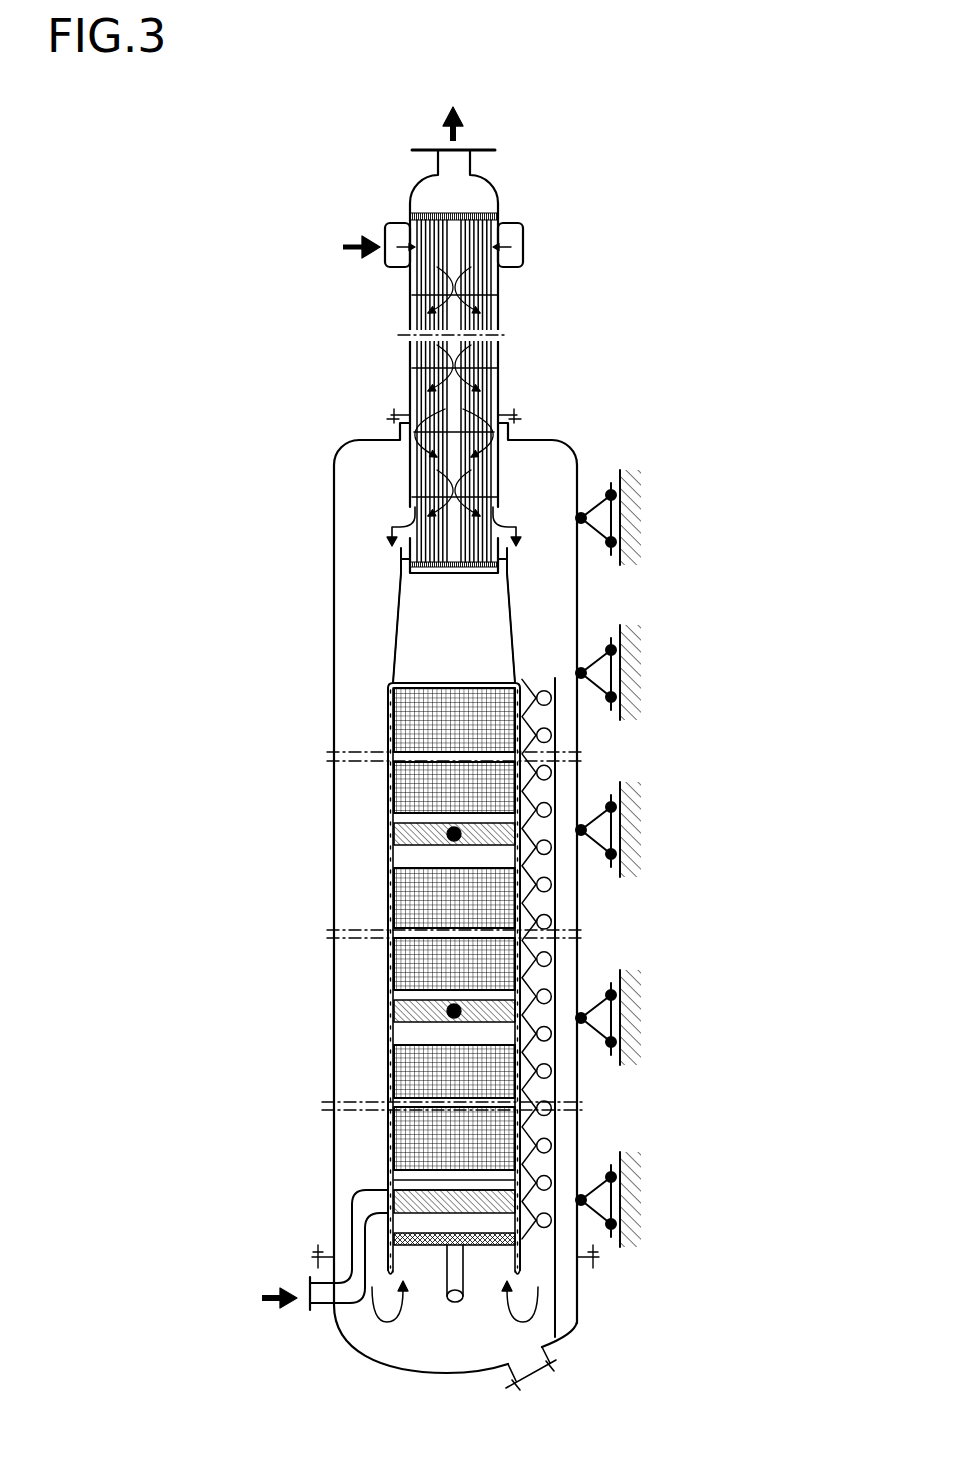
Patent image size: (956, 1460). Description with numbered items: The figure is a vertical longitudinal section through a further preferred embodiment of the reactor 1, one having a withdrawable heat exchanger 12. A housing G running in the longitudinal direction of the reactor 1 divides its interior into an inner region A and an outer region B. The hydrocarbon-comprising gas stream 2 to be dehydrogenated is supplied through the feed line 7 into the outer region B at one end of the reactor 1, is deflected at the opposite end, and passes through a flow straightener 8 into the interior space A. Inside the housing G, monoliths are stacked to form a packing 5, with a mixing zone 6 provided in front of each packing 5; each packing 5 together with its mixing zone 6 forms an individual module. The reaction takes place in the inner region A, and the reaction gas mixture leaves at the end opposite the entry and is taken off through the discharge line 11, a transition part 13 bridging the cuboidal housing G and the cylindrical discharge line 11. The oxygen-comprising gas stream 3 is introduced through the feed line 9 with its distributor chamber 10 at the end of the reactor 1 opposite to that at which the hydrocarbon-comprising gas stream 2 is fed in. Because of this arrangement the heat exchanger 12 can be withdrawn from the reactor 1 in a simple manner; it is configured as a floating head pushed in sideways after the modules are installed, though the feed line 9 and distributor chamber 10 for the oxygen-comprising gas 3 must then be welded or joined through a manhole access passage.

The reactor 1 is at (314, 762).
The hydrocarbon-comprising gas stream 2 is at (356, 240).
The oxygen-comprising gas stream 3 is at (283, 1291).
The packing 5 is at (400, 790).
The mixing zone 6 is at (397, 1013).
The feed line 7 is at (392, 223).
The flow straightener 8 is at (497, 1245).
The feed line 9 is at (327, 1293).
The distributor chamber 10 is at (492, 1000).
The discharge line 11 is at (457, 133).
The heat exchanger 12 is at (487, 345).
The transition part 13 is at (393, 648).
The inner region A is at (547, 1056).
The outer region B is at (348, 603).
The housing G is at (388, 1063).